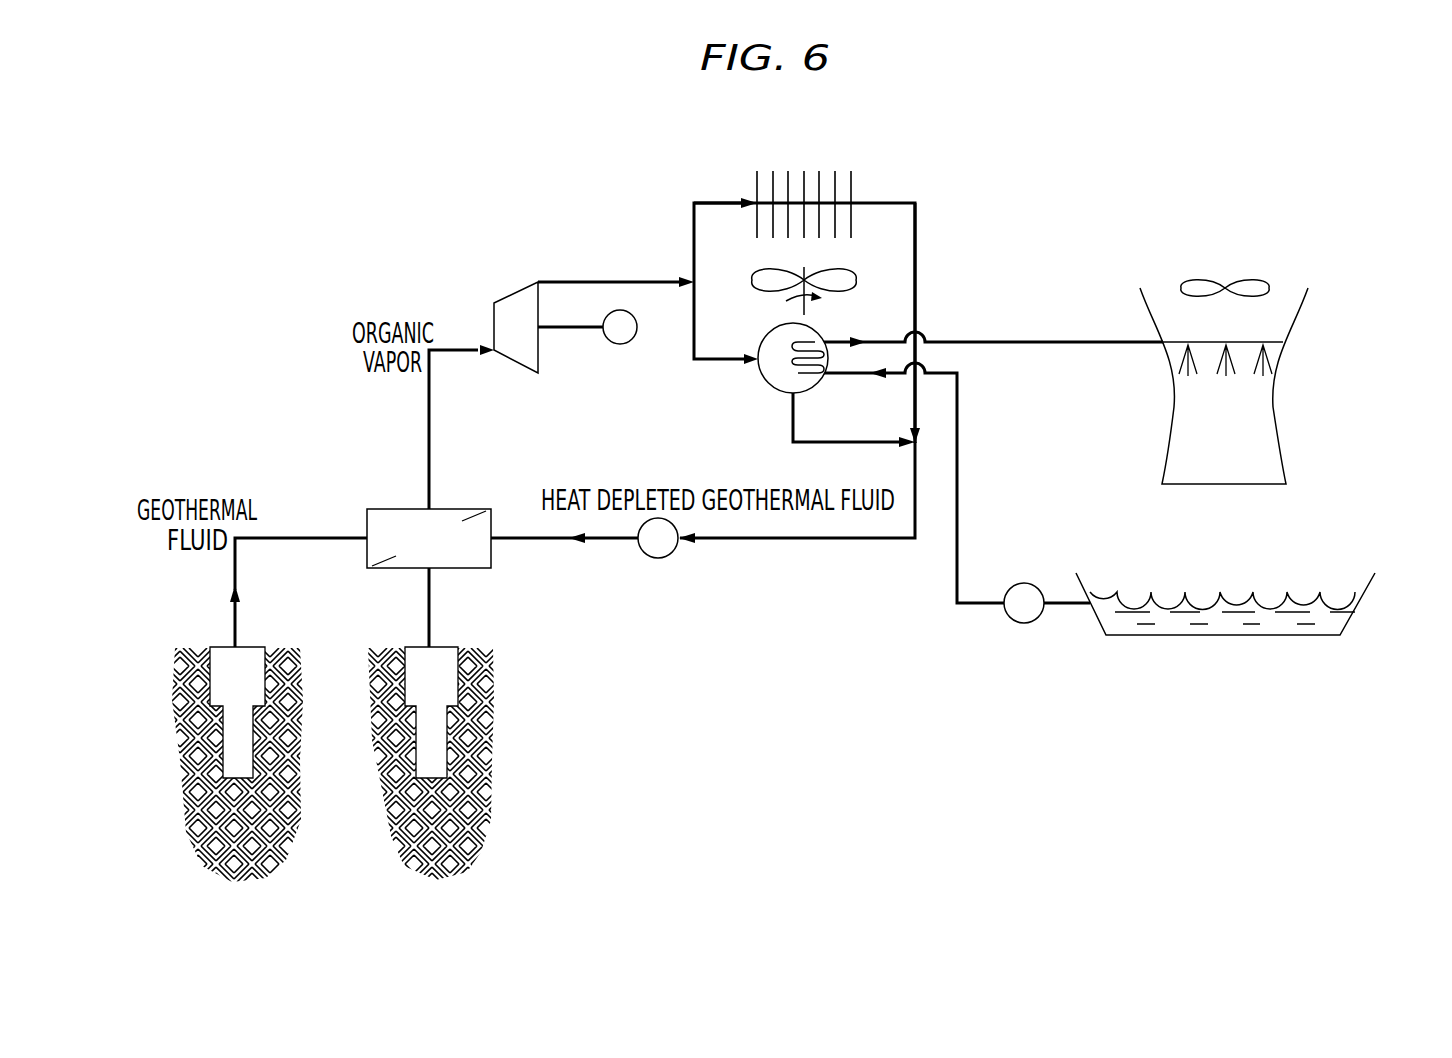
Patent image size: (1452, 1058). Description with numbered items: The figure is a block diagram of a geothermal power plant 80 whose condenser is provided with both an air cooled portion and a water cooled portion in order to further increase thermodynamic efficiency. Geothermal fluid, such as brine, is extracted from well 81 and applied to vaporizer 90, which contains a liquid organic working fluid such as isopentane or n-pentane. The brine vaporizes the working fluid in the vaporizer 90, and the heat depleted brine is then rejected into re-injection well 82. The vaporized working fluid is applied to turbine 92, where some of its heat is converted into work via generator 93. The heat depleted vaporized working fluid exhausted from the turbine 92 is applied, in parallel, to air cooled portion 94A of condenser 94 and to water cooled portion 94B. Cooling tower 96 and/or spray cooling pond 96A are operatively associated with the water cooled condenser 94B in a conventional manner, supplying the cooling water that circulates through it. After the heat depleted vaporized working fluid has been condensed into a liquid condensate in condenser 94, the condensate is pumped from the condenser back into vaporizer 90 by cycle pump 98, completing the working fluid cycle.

The power plant 80 is at (284, 205).
The well 81 is at (237, 630).
The re-injection well 82 is at (430, 612).
The vaporizer 90 is at (388, 508).
The turbine 92 is at (516, 293).
The generator 93 is at (618, 345).
The condenser 94 is at (756, 200).
The air cooled portion 94A is at (826, 172).
The water cooled portion 94B is at (768, 387).
The cooling tower 96 is at (1274, 396).
The spray cooling pond 96A is at (1272, 636).
The cycle pump 98 is at (663, 557).